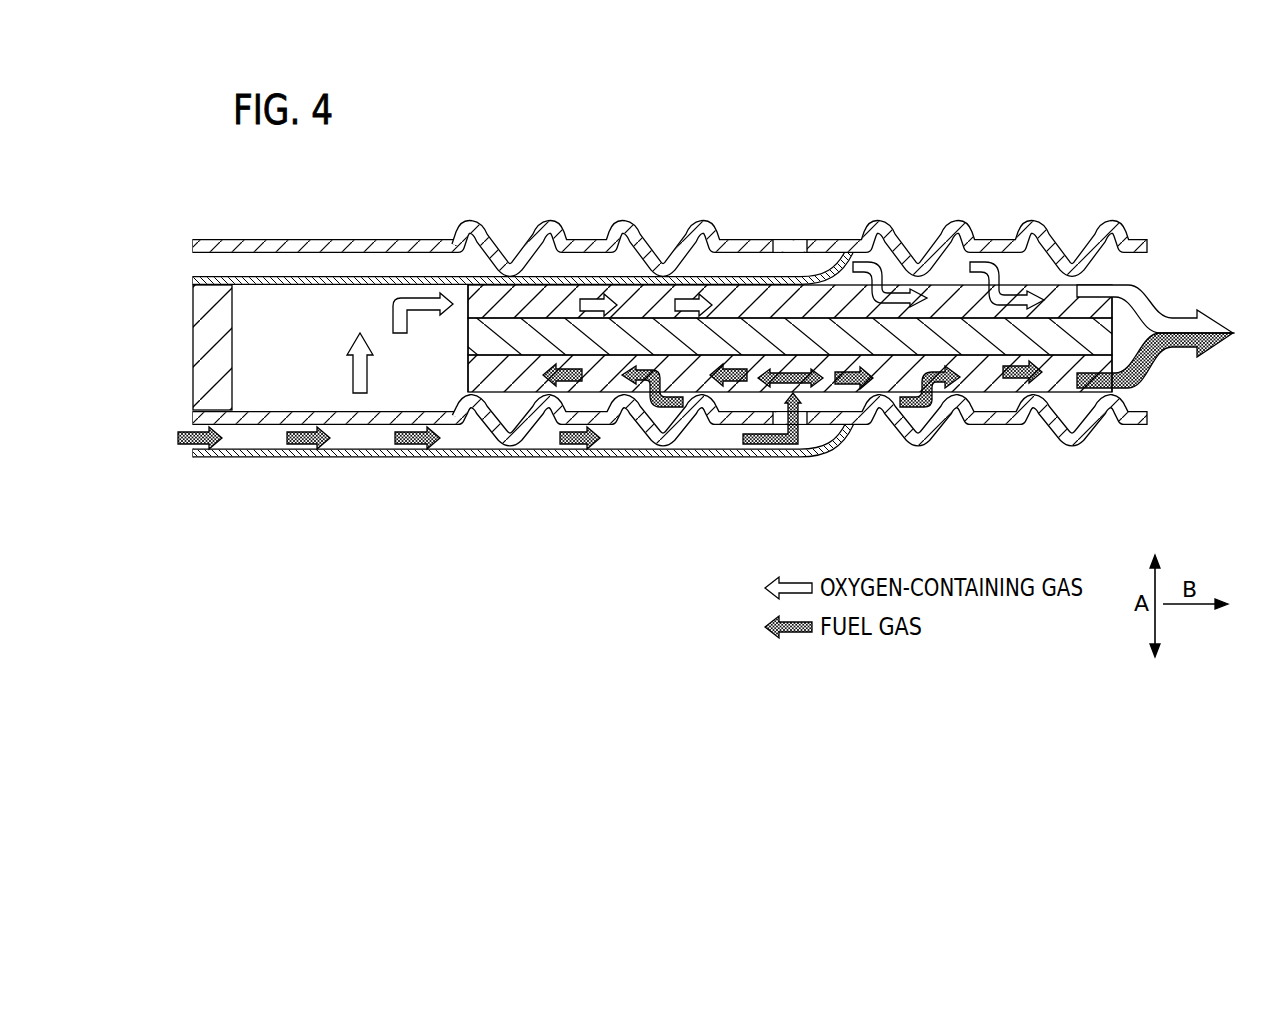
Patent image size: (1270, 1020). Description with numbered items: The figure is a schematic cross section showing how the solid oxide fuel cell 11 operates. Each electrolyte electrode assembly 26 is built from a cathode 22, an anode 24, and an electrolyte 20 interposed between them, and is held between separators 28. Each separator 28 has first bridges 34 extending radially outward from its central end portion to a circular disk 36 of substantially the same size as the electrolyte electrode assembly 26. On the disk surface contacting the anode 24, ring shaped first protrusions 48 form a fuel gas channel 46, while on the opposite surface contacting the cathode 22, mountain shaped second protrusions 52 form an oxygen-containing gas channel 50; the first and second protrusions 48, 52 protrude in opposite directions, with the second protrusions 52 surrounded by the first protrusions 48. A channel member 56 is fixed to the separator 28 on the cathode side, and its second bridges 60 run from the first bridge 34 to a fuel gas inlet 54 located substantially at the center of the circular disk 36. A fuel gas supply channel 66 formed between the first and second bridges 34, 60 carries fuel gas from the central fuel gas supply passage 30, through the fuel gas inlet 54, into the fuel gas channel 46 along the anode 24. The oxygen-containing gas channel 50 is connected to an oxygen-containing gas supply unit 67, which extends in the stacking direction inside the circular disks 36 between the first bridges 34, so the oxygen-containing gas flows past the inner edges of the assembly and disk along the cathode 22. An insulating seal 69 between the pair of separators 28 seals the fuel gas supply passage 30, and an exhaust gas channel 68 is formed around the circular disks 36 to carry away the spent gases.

The fuel cell 11 is at (452, 160).
The electrolyte 20 is at (1008, 312).
The cathode 22 is at (994, 343).
The anode 24 is at (978, 372).
The electrolyte electrode assembly 26 is at (1045, 462).
The separator 28 is at (1160, 210).
The fuel gas supply passage 30 is at (173, 382).
The first bridge 34 is at (260, 245).
The circular disk 36 is at (1000, 225).
The fuel gas channel 46 is at (828, 403).
The first protrusion 48 is at (623, 226).
The oxygen-containing gas channel 50 is at (889, 273).
The second protrusion 52 is at (963, 260).
The fuel gas inlet 54 is at (803, 425).
The channel member 56 is at (303, 287).
The second bridge 60 is at (271, 286).
The fuel gas supply channel 66 is at (322, 273).
The oxygen-containing gas supply unit 67 is at (281, 382).
The exhaust gas channel 68 is at (1165, 320).
The insulating seal 69 is at (215, 345).